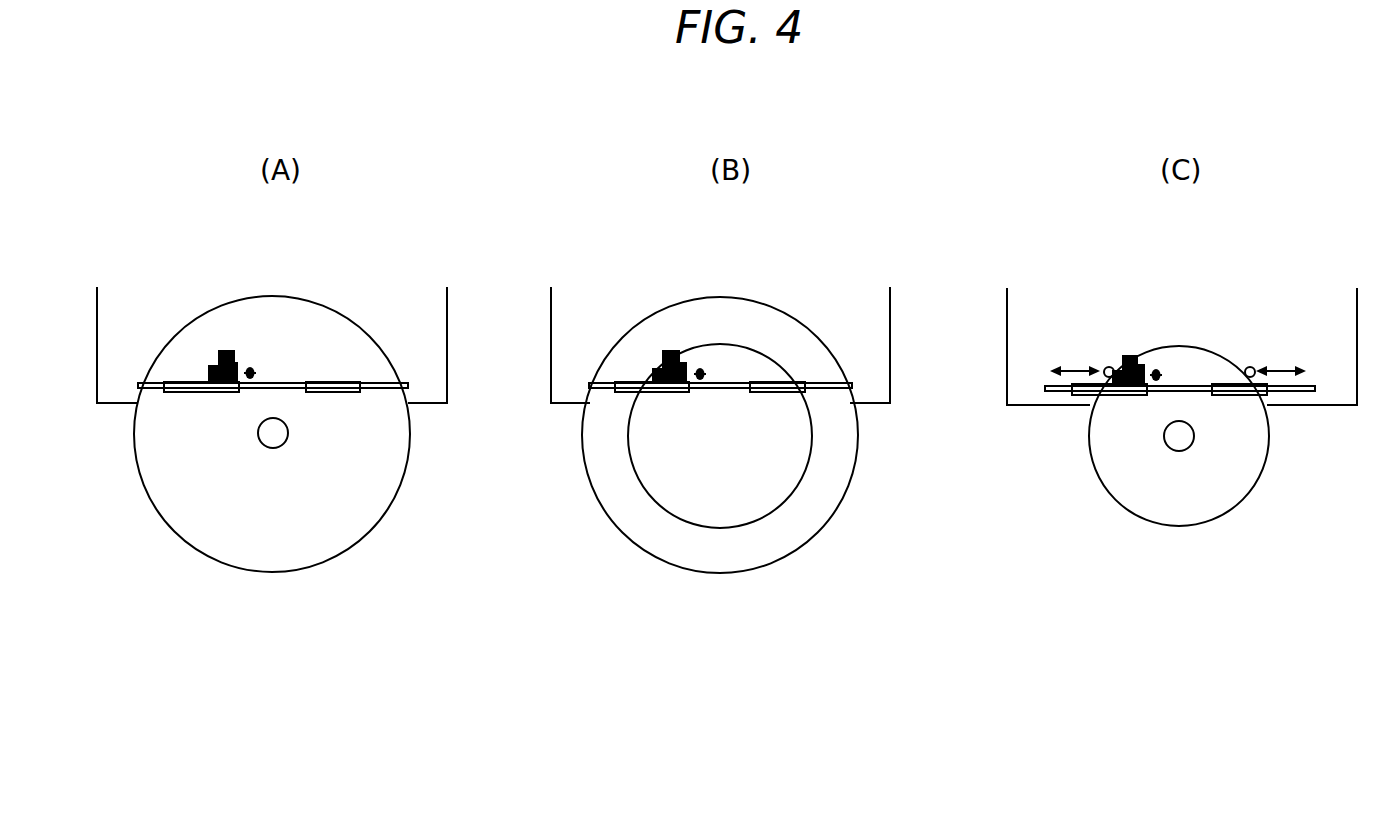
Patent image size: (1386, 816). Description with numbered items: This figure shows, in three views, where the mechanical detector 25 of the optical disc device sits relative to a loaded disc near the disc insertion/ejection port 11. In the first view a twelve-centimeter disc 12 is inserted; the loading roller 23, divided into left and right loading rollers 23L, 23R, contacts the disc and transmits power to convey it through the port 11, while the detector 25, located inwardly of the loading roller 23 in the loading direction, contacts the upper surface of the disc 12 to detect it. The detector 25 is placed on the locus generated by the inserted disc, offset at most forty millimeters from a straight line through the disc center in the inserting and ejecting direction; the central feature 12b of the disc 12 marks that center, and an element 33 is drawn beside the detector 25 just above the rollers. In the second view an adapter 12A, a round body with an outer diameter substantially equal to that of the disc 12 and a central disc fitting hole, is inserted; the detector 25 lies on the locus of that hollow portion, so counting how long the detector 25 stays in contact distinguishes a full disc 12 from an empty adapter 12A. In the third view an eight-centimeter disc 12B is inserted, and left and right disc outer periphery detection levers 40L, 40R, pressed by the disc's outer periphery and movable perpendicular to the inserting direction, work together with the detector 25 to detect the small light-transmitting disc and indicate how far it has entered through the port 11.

The disc insertion/ejection port 11 is at (428, 405).
The disc 12 is at (393, 363).
The roller shaft 12b is at (270, 447).
The adapter 12A is at (842, 495).
The 8-cm disc 12B is at (1255, 490).
The loading roller 23 is at (297, 408).
The left loading roller 23L is at (198, 393).
The right loading roller 23R is at (333, 393).
The mechanical detector 25 is at (231, 334).
The pivot pin 33 is at (250, 367).
The disc outer periphery detection lever (left) 40L is at (1109, 367).
The disc outer periphery detection lever (right) 40R is at (1250, 367).